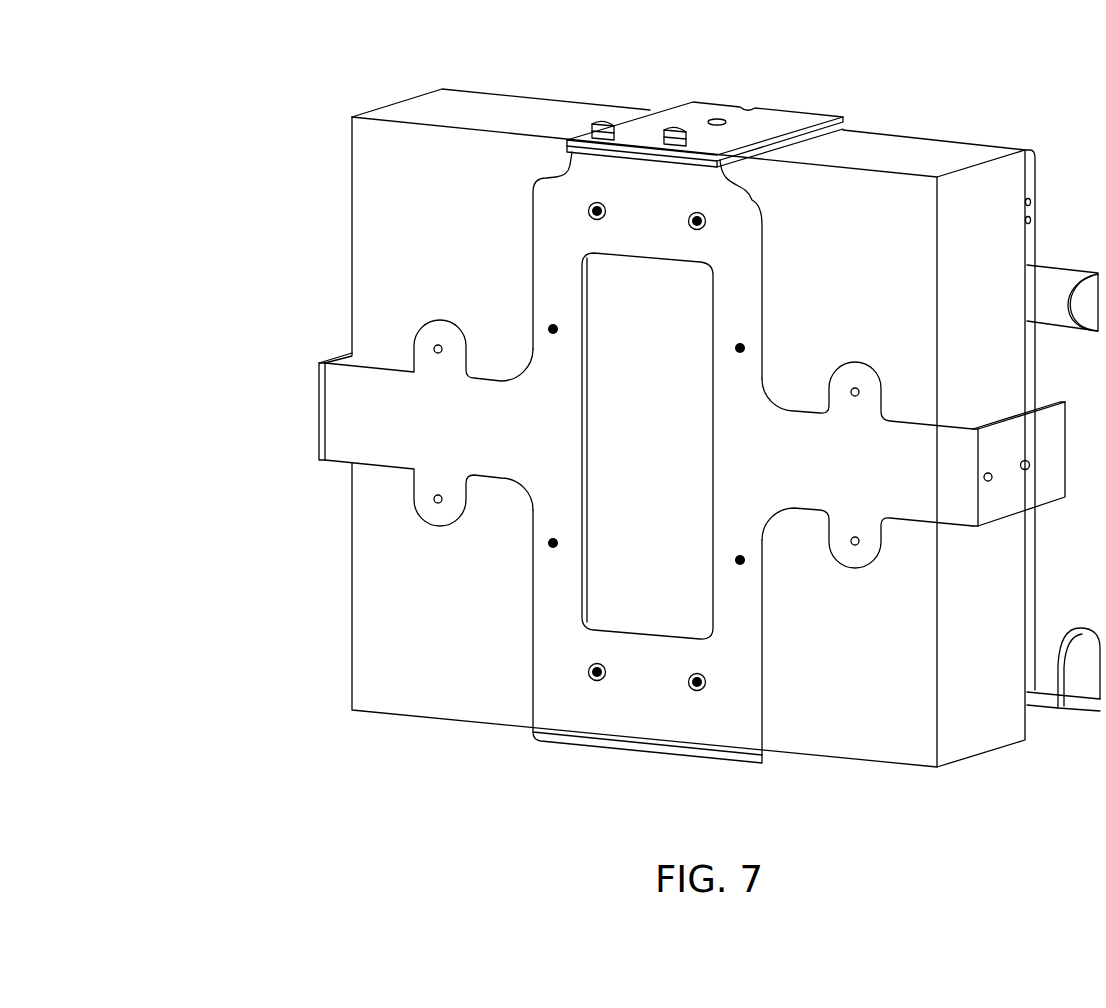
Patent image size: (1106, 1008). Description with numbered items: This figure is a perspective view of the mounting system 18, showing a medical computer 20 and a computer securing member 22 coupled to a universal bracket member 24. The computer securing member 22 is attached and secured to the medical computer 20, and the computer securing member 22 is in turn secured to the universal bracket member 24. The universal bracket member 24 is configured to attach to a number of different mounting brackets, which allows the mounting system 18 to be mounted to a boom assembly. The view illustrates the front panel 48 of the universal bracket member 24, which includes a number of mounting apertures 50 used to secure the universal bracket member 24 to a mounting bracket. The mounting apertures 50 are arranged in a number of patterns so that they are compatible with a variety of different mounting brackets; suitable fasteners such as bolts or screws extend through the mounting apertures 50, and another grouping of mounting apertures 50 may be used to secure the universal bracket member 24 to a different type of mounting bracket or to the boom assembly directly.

The mounting system 18 is at (284, 137).
The medical computer 20 is at (417, 110).
The computer securing member 22 is at (733, 97).
The universal bracket member 24 is at (314, 391).
The front panel 48 is at (541, 486).
The mounting apertures 50 is at (553, 329).